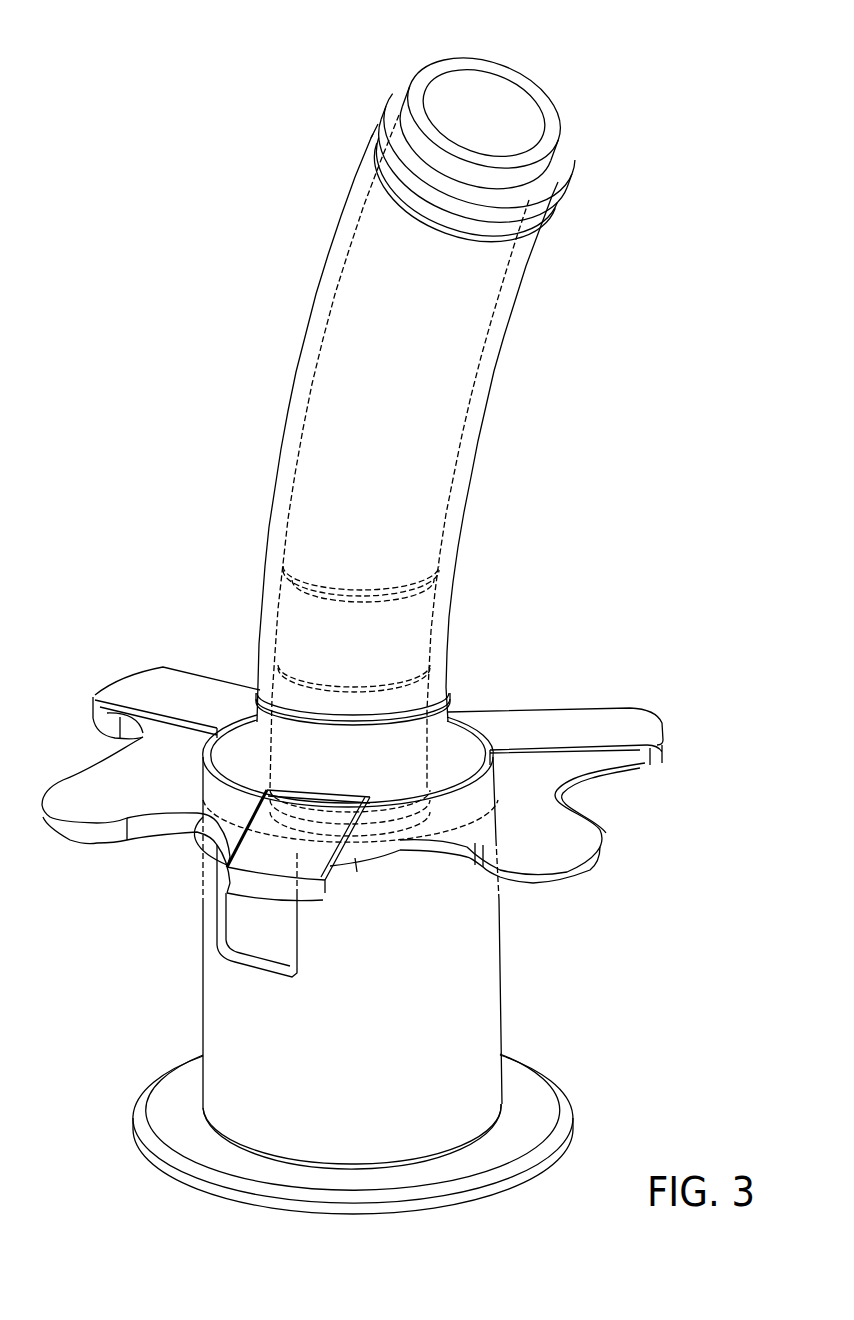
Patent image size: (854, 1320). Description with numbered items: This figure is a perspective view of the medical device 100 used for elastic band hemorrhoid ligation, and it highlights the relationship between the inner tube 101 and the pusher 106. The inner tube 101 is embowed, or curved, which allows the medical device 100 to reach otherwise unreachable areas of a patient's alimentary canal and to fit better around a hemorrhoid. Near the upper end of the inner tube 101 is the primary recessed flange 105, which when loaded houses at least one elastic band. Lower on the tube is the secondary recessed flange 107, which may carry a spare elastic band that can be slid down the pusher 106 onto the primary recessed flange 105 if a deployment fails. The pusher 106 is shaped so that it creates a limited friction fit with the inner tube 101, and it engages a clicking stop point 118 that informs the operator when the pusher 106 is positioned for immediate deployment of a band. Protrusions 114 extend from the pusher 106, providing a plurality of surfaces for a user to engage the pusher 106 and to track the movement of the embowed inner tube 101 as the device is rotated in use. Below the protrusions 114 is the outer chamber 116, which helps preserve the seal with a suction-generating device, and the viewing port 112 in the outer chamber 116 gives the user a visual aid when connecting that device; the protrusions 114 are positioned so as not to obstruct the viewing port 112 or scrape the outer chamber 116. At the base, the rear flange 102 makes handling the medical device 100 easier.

The medical device 100 is at (199, 341).
The inner tube 101 is at (512, 73).
The rear flange 102 is at (562, 1095).
The primary recessed flange 105 is at (407, 155).
The pusher 106 is at (467, 480).
The secondary recessed flange 107 is at (257, 690).
The viewing port 112 is at (217, 950).
The protrusions 114 is at (643, 712).
The outer chamber 116 is at (502, 965).
The clicking stop point 118 is at (260, 545).